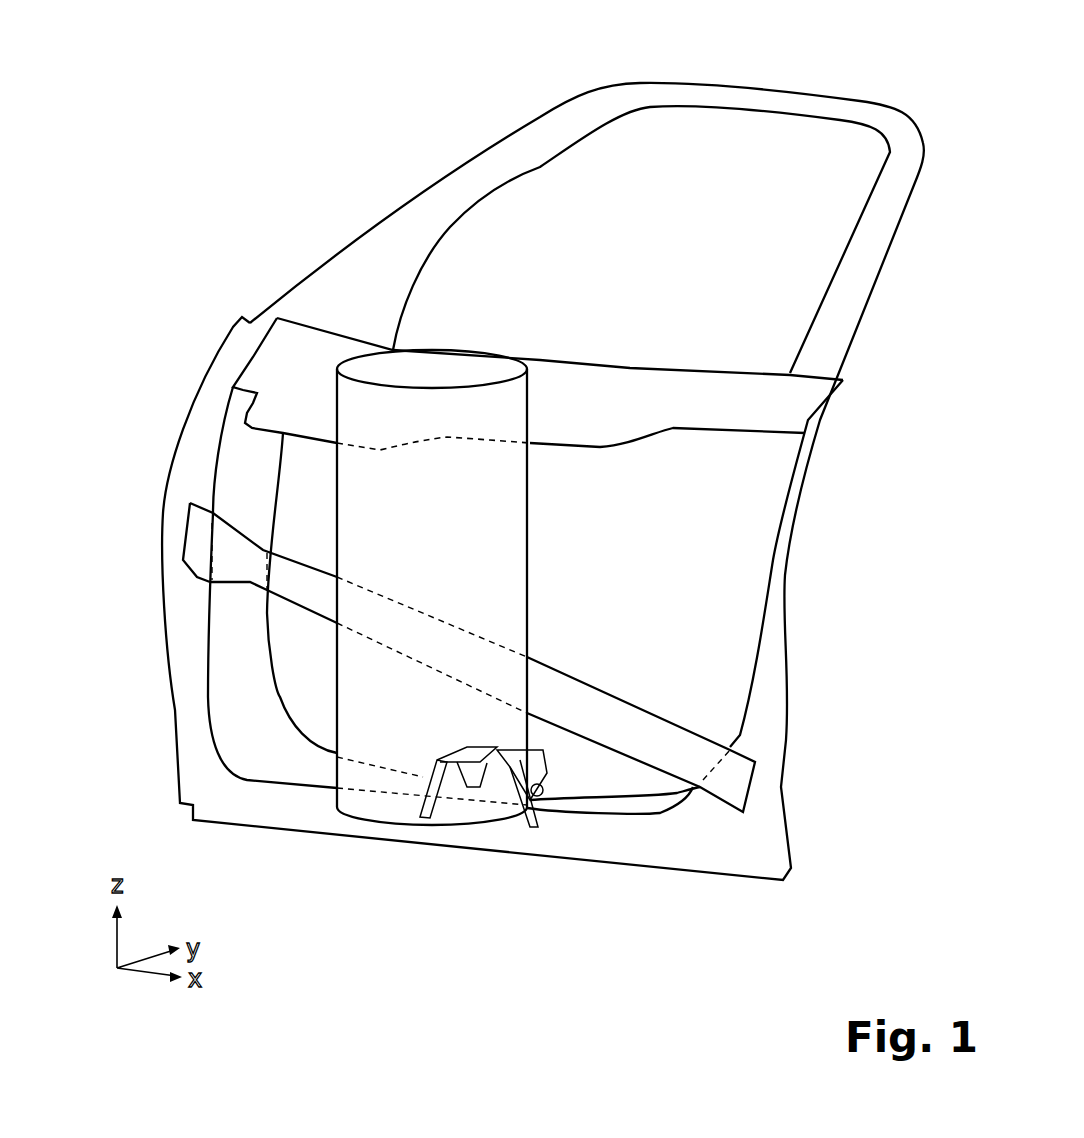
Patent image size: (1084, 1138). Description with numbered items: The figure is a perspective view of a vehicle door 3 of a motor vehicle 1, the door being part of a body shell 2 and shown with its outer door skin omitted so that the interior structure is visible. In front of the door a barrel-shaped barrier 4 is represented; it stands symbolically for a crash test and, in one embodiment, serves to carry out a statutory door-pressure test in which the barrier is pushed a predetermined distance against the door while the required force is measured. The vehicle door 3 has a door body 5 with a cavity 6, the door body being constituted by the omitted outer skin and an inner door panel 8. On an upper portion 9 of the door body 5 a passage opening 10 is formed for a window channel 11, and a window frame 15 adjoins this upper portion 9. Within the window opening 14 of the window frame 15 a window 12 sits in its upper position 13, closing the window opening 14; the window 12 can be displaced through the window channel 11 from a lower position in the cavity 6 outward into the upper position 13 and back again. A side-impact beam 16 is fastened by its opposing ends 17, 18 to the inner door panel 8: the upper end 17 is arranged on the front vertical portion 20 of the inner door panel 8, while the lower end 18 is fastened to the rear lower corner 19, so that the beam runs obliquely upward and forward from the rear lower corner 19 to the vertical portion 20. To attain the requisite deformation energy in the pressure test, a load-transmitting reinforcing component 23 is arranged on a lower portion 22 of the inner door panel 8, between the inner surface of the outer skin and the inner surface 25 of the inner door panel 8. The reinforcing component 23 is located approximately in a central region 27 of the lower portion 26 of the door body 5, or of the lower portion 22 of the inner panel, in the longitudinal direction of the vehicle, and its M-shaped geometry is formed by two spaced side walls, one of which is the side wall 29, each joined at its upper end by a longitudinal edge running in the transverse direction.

The motor vehicle 1 is at (543, 444).
The body shell 2 is at (543, 444).
The vehicle door 3 is at (551, 90).
The barrel-shaped barrier 4 is at (470, 407).
The door body 5 is at (557, 597).
The cavity 6 is at (557, 597).
The inner door panel 8 is at (722, 578).
The upper portion 9 is at (538, 376).
The passage opening 10 is at (538, 376).
The window channel 11 is at (660, 390).
The window 12 is at (645, 245).
The upper position 13 is at (683, 243).
The window opening 14 is at (641, 239).
The window frame 15 is at (750, 110).
The side-impact beam 16 is at (467, 658).
The upper end 17 is at (197, 540).
The lower end 18 is at (740, 782).
The rear lower corner 19 is at (697, 807).
The vertical portion 20 is at (178, 697).
The lower portion 22 is at (274, 797).
The reinforcing component 23 is at (531, 854).
The inner surface 25 is at (297, 748).
The lower portion 26 is at (416, 830).
The central region 27 is at (553, 827).
The side wall 29 is at (531, 854).